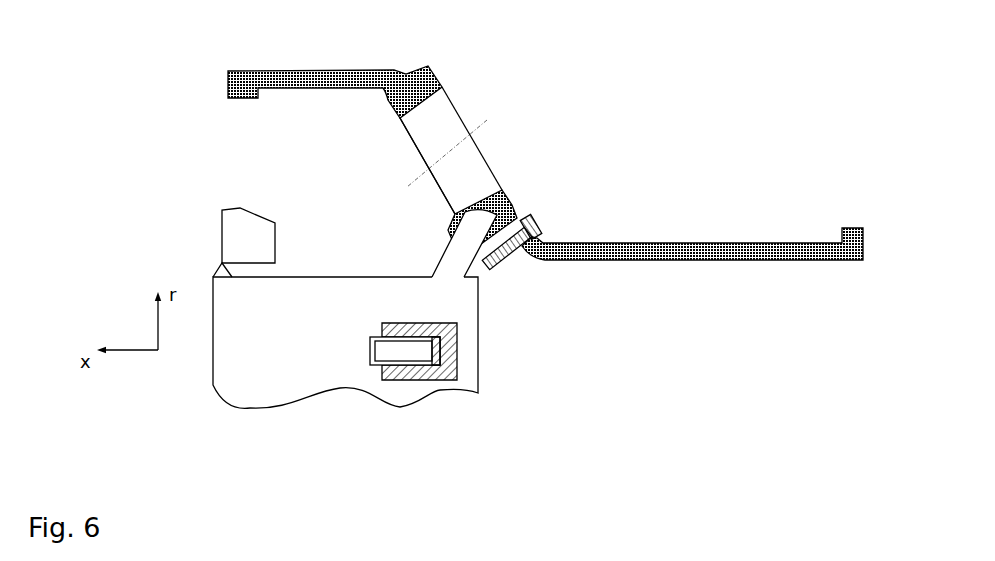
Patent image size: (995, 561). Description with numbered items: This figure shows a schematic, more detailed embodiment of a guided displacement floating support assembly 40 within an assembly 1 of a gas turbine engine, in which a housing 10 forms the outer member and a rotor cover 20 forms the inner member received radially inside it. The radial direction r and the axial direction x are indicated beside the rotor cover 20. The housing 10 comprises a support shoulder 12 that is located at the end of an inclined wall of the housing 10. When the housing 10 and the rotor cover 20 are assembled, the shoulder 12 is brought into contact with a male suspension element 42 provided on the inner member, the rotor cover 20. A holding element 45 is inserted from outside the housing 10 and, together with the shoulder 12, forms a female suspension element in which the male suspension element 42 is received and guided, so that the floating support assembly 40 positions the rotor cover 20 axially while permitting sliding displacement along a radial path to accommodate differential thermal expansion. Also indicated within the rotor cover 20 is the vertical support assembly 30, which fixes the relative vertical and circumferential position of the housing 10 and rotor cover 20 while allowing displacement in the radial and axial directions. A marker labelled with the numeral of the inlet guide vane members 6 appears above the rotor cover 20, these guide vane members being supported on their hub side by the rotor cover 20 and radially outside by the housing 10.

The assembly 1 is at (185, 395).
The inlet guide vane members 6 is at (239, 247).
The housing 10 is at (514, 194).
The support shoulder 12 is at (456, 212).
The rotor cover 20 is at (345, 308).
The vertical support assembly 30 is at (474, 348).
The floating support assembly 40 is at (672, 237).
The male suspension element 42 is at (442, 255).
The holding element 45 is at (540, 232).